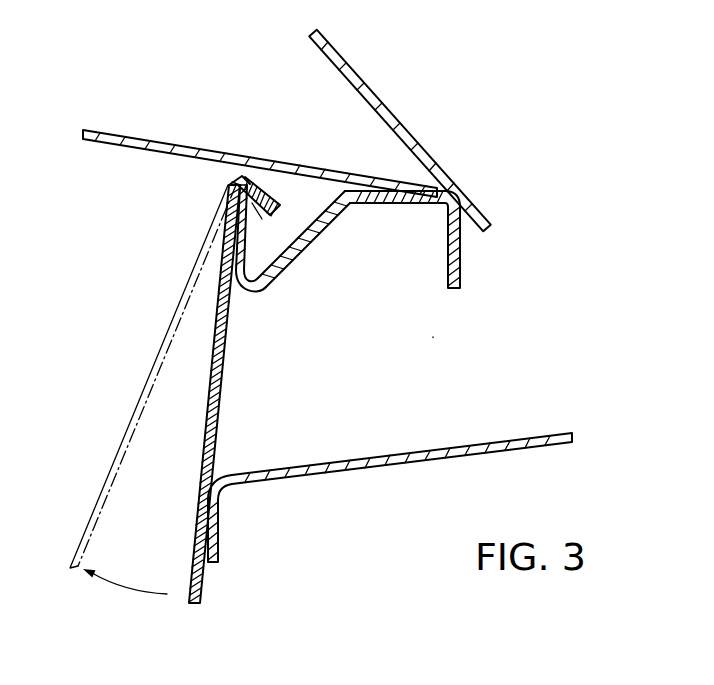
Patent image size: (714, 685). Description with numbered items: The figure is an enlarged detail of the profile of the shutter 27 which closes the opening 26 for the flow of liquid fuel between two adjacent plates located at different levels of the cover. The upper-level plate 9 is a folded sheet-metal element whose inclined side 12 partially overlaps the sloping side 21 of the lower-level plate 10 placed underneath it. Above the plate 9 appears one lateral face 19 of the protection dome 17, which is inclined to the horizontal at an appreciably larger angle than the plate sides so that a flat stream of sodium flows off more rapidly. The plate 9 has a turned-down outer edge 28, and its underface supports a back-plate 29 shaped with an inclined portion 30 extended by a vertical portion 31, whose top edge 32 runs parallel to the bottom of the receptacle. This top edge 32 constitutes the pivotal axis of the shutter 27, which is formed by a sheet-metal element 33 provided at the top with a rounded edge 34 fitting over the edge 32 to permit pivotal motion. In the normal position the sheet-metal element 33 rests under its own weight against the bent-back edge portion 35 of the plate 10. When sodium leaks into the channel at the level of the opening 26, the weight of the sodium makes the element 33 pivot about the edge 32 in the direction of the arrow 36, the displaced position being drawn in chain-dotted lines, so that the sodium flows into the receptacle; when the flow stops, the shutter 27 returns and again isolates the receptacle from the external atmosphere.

The plate 9 is at (260, 132).
The plate 10 is at (402, 439).
The side 12 is at (210, 151).
The protection dome 17 is at (413, 126).
The lateral face 19 is at (428, 155).
The side 21 is at (368, 457).
The opening 26 is at (433, 337).
The shutter 27 is at (230, 407).
The turned-down outer edge 28 is at (460, 265).
The back-plate 29 is at (353, 207).
The inclined portion 30 is at (297, 251).
The vertical portion 31 is at (252, 291).
The top edge 32 is at (233, 178).
The sheet-metal element 33 is at (215, 394).
The rounded edge 34 is at (271, 197).
The bent-back edge portion 35 is at (220, 533).
The arrow 36 is at (127, 586).